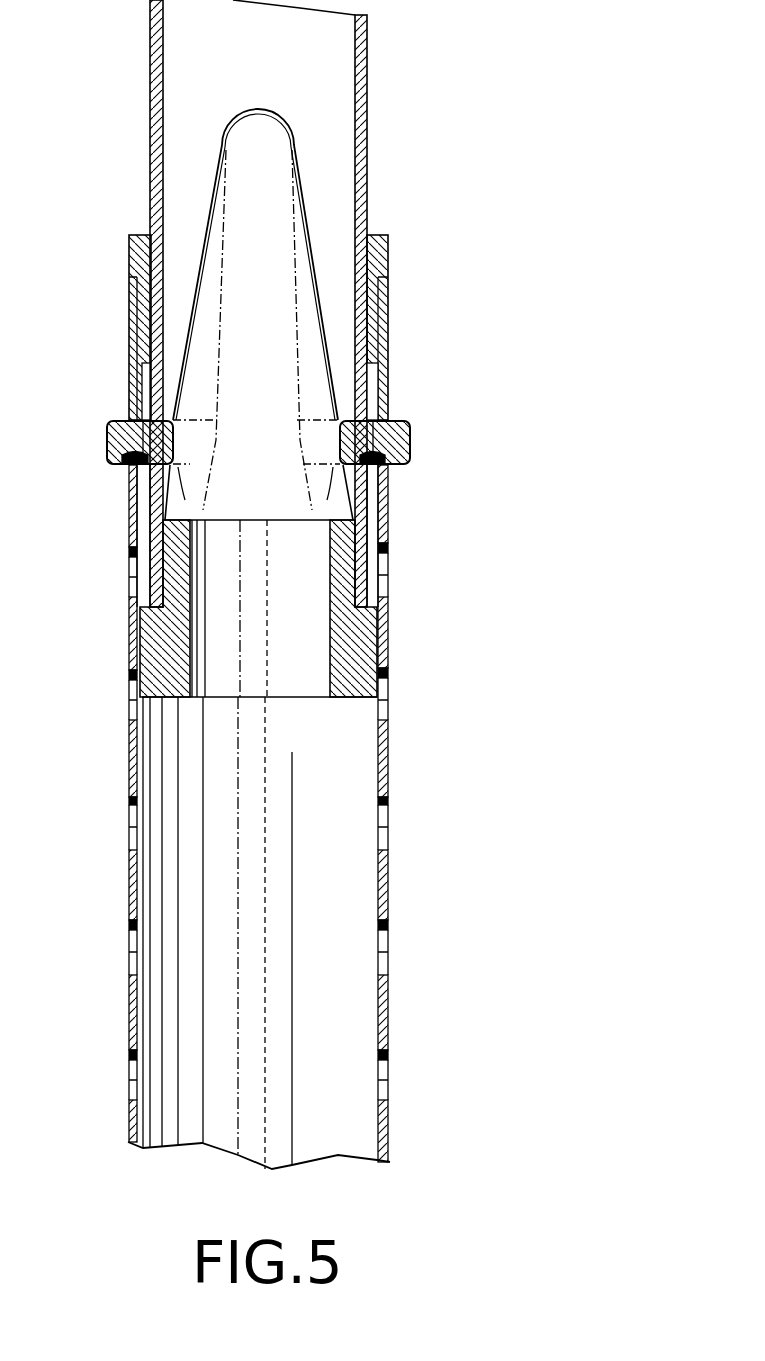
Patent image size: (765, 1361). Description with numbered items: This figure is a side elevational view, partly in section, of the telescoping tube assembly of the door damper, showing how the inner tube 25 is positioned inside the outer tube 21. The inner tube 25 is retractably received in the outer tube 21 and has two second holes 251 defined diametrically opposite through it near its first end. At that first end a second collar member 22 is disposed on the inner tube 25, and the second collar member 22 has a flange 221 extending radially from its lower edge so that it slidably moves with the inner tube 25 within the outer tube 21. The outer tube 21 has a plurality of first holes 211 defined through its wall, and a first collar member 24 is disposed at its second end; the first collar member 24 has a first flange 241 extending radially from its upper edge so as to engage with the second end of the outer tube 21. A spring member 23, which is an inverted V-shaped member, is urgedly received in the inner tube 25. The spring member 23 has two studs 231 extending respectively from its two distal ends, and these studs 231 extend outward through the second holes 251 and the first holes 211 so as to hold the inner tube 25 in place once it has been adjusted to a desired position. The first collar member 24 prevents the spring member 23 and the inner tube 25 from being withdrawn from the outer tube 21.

The inner tube 25 is at (363, 97).
The spring member 23 is at (300, 188).
The first collar member 24 is at (128, 230).
The first flange 241 is at (383, 247).
The outer tube 21 is at (389, 310).
The first holes 211 is at (395, 421).
The studs 231 is at (411, 440).
The second holes 251 is at (391, 466).
The second collar member 22 is at (345, 565).
The flange 221 is at (346, 690).